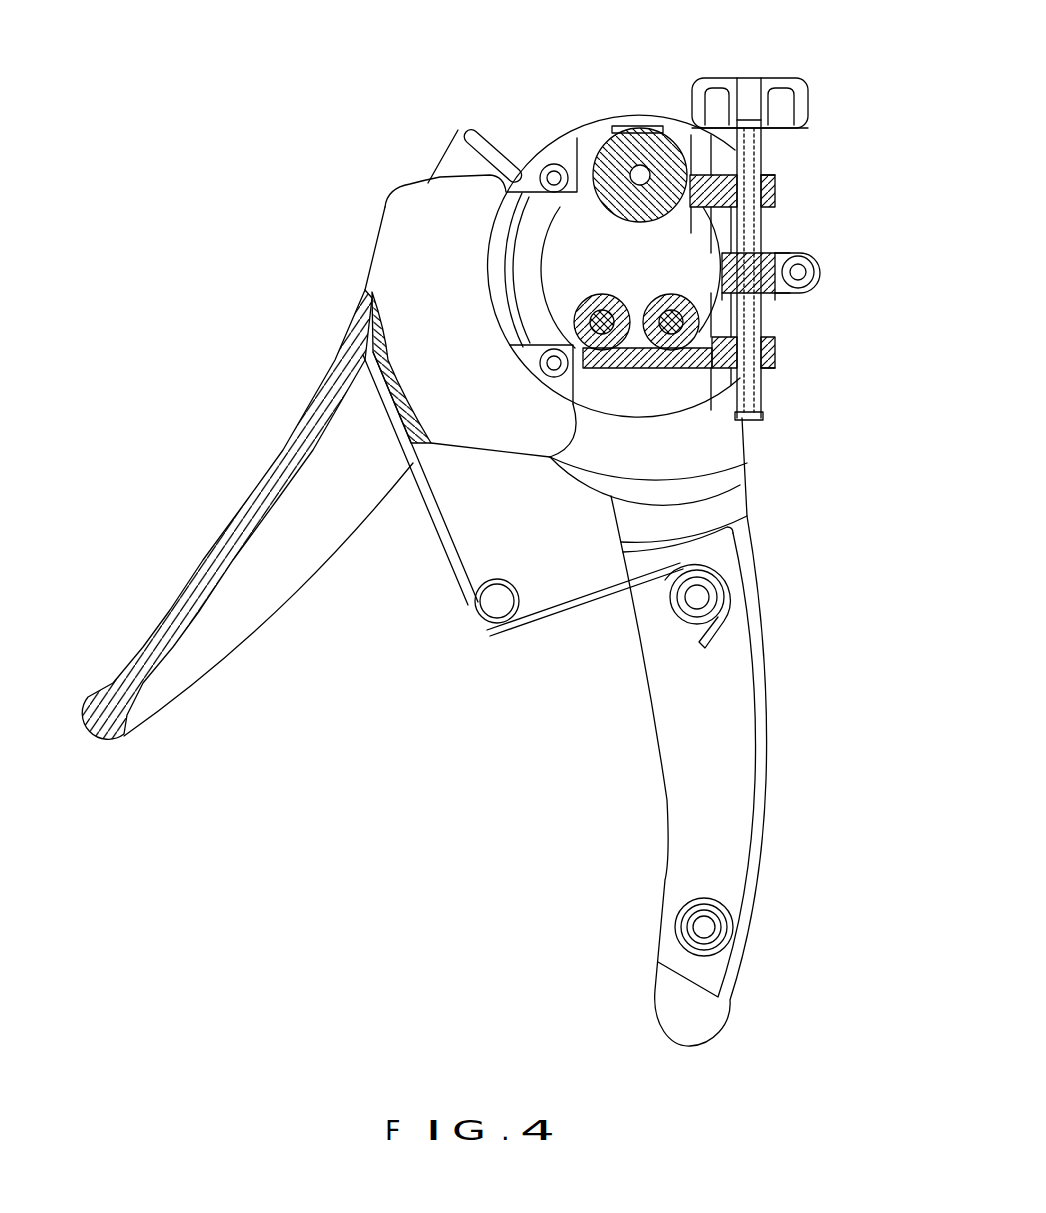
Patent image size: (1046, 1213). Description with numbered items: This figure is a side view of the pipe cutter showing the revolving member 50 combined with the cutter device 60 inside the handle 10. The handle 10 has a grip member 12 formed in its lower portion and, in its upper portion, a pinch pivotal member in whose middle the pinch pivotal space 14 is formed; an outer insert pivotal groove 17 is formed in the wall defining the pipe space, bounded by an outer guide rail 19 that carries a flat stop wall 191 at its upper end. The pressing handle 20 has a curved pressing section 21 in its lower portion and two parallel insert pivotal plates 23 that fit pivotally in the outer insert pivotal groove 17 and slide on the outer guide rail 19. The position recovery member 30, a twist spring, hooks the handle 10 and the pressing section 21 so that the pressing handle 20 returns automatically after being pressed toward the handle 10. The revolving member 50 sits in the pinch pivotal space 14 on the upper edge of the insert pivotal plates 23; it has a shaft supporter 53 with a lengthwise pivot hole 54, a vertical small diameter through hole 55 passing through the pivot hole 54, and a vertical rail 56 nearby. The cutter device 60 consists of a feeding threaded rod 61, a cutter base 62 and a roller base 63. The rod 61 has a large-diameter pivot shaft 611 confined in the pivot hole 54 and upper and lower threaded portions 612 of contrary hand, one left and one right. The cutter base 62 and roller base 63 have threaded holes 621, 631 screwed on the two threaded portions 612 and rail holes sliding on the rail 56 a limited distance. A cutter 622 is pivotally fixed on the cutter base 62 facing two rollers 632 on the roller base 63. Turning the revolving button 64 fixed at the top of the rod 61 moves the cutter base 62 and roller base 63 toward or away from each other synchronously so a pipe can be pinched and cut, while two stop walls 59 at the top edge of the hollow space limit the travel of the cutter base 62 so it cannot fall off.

The handle 10 is at (772, 775).
The grip member 12 is at (750, 885).
The pinch pivotal space 14 is at (690, 172).
The outer insert pivotal groove 17 is at (463, 168).
The outer guide rail 19 is at (462, 135).
The flat stop wall 191 is at (495, 155).
The pressing handle 20 is at (110, 668).
The pressing section 21 is at (178, 603).
The insert pivotal plates 23 is at (435, 193).
The position recovery member 30 is at (482, 628).
The revolving member 50 is at (537, 150).
The shaft supporter 53 is at (820, 275).
The pivot hole 54 is at (780, 293).
The small diameter through hole 55 is at (790, 258).
The vertical rail 56 is at (713, 228).
The stop walls 59 is at (637, 127).
The cutter device 60 is at (780, 80).
The feeding threaded rod 61 is at (765, 418).
The pivot shaft 611 is at (770, 298).
The threaded portions 612 is at (752, 158).
The cutter base 62 is at (778, 200).
The threaded hole 621 is at (765, 185).
The cutter 622 is at (613, 153).
The roller base 63 is at (777, 352).
The threaded hole 631 is at (770, 370).
The rollers 632 is at (602, 330).
The revolving button 64 is at (800, 80).